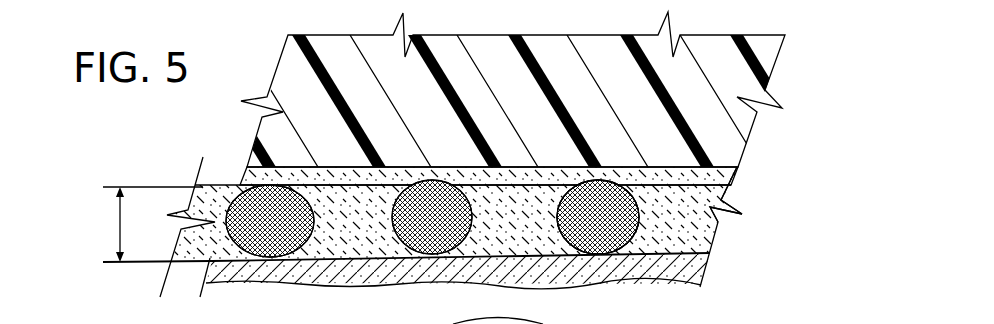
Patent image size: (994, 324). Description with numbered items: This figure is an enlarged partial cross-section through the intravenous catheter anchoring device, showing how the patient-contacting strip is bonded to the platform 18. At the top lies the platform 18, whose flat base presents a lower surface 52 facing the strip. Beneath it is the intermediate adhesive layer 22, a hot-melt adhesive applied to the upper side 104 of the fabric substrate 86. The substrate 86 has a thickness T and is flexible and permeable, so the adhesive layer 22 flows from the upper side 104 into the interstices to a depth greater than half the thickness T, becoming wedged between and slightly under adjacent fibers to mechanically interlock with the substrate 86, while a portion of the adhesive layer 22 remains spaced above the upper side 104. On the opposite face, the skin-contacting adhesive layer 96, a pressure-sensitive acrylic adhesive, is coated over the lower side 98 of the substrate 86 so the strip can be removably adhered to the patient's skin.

The platform 18 is at (288, 92).
The lower surface 52 is at (242, 101).
The intermediate adhesive layer 22 is at (238, 178).
The skin-contacting adhesive layer 96 is at (228, 262).
The substrate 86 is at (610, 240).
The lower side 98 is at (683, 252).
The upper side 104 is at (717, 194).
The thickness T is at (113, 227).